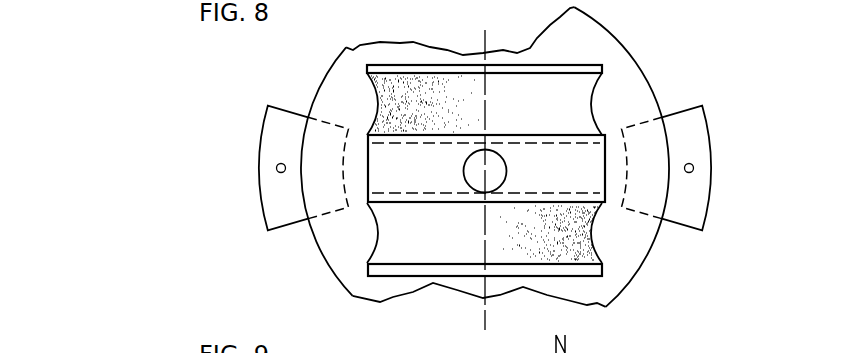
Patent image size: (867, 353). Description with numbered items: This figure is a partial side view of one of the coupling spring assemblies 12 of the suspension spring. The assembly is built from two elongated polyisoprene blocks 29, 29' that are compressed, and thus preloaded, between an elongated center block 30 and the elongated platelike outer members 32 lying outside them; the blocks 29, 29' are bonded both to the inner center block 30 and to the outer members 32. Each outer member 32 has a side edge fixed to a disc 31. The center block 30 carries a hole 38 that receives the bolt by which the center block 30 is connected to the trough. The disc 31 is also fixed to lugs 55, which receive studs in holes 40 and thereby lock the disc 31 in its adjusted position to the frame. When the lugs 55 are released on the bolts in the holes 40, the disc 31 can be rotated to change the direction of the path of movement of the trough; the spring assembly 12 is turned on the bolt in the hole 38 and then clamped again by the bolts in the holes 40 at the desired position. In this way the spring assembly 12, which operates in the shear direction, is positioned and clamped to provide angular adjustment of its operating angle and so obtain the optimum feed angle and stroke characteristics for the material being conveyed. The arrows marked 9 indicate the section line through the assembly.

In FIG. 8, the coupling spring assembly 12 is at (312, 102).
In FIG. 8, the section line of FIG. 9 is at (452, 42).
In FIG. 8, the outer member 32 is at (543, 67).
In FIG. 9, the outer member 32 is at (542, 344).
In FIG. 8, the polyisoprene block 29 is at (484, 104).
In FIG. 8, the polyisoprene block 29' is at (484, 233).
In FIG. 8, the center block 30 is at (594, 147).
In FIG. 8, the hole 38 is at (463, 170).
In FIG. 8, the disc 31 is at (620, 283).
In FIG. 8, the hole 40 is at (694, 168).
In FIG. 8, the lug 55 is at (698, 136).